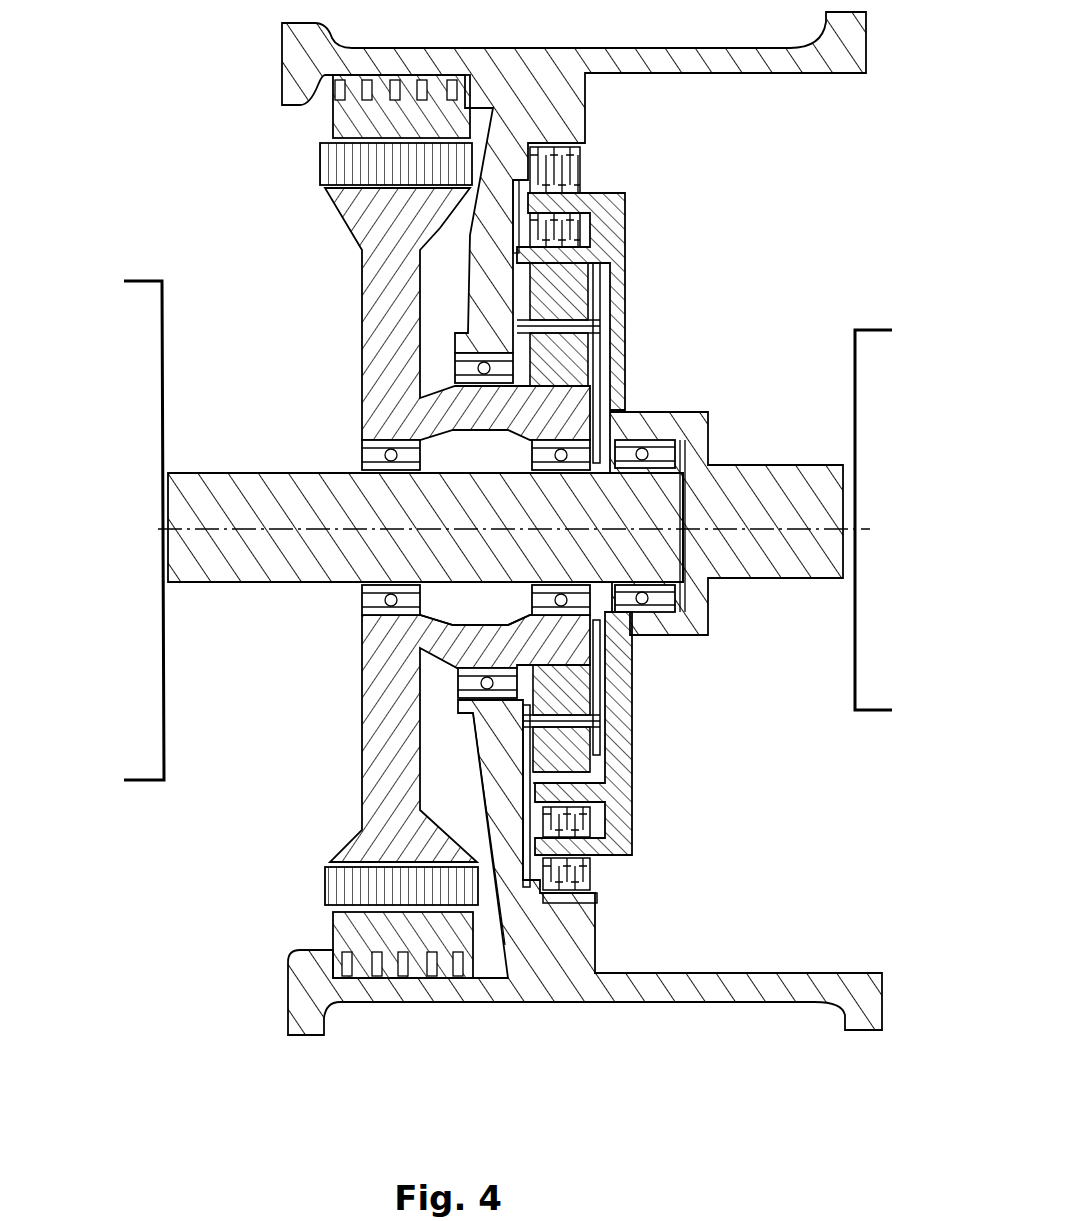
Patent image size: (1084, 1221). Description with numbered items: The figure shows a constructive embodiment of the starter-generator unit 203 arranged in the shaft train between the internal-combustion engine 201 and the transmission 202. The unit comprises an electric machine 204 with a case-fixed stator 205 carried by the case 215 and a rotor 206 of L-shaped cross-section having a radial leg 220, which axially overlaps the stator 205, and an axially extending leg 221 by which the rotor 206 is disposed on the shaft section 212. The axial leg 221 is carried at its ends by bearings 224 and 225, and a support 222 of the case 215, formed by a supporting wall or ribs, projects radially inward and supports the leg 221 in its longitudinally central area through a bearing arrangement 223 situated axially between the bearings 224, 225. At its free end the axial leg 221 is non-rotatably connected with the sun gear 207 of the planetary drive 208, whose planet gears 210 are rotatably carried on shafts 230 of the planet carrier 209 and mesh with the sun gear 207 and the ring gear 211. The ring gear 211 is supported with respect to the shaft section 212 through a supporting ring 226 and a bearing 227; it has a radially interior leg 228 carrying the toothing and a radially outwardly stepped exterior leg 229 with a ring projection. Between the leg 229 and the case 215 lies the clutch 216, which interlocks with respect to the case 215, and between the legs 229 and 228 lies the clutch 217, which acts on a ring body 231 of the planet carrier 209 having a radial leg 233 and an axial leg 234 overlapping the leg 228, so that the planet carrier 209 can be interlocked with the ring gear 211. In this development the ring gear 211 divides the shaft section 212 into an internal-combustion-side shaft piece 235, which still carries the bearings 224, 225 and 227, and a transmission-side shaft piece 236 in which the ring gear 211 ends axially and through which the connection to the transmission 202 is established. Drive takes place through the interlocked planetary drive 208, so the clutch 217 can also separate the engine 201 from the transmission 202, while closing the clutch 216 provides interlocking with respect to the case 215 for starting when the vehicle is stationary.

The internal-combustion engine 201 is at (137, 363).
The transmission 202 is at (932, 393).
The starter-generator unit 203 is at (352, 1040).
The electric machine 204 is at (400, 95).
The stator 205 is at (333, 123).
The rotor 206 is at (355, 320).
The sun gear 207 is at (612, 648).
The planetary drive 208 is at (660, 908).
The planet carrier 209 is at (598, 667).
The planet gears 210 is at (575, 300).
The ring gear 211 is at (617, 275).
The shaft section 212 is at (322, 588).
The case 215 is at (548, 65).
The clutch 216 is at (585, 170).
The clutch 217 is at (585, 228).
The radial leg 220 is at (370, 696).
The axial leg 221 is at (485, 634).
The support 222 is at (480, 757).
The bearing arrangement 223 is at (612, 720).
The bearing 224 is at (370, 452).
The bearing 225 is at (558, 450).
The supporting ring 226 is at (632, 766).
The bearing 227 is at (648, 452).
The leg 228 is at (590, 822).
The leg 229 is at (565, 870).
The shafts 230 is at (605, 345).
The ring body 231 is at (528, 768).
The radial leg 233 is at (452, 868).
The axial leg 234 is at (440, 905).
The internal-combustion-side shaft piece 235 is at (262, 565).
The transmission-side shaft piece 236 is at (820, 570).